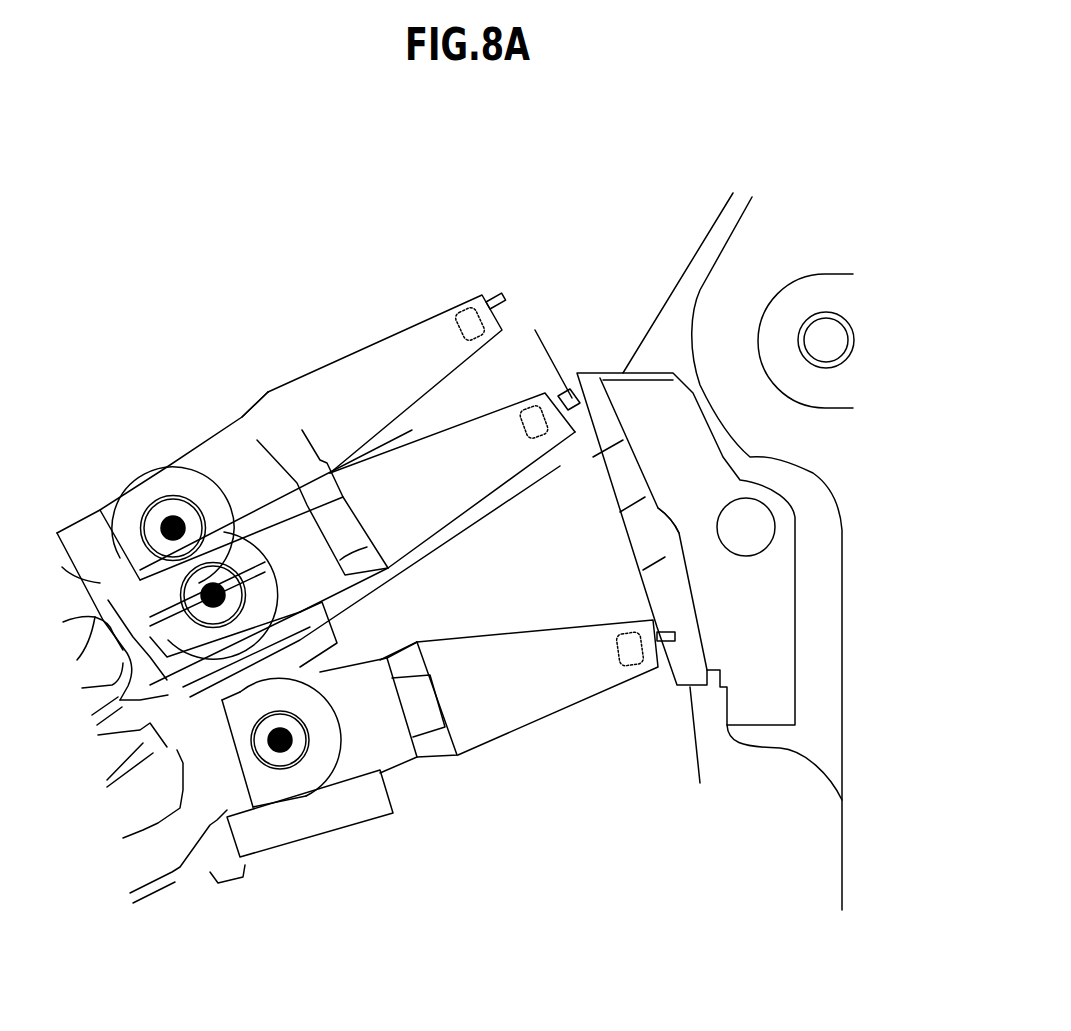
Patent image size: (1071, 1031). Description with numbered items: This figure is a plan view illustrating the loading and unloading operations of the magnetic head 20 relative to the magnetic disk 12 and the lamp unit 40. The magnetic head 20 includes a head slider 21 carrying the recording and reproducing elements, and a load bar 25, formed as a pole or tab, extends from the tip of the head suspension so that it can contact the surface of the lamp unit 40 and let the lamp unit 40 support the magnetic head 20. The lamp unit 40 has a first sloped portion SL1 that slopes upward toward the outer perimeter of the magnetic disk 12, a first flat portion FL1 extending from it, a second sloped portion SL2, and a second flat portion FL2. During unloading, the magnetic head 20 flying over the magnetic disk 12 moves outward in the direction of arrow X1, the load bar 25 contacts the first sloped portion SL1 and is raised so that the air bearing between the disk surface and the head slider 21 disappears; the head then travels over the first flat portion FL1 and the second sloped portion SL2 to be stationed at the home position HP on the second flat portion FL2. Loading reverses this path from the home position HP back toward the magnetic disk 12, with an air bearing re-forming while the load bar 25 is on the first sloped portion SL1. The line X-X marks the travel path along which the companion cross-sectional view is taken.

The magnetic disk 12 is at (318, 258).
The magnetic head 20 is at (243, 378).
The head slider 21 is at (460, 307).
The load bar 25 is at (498, 296).
The lamp unit 40 is at (710, 467).
The home position HP is at (728, 649).
The line X- X is at (550, 336).
The arrow X1 is at (458, 377).
The first sloped portion SL1 is at (610, 417).
The first flat portion FL1 is at (633, 467).
The second sloped portion SL2 is at (650, 503).
The second flat portion FL2 is at (682, 578).